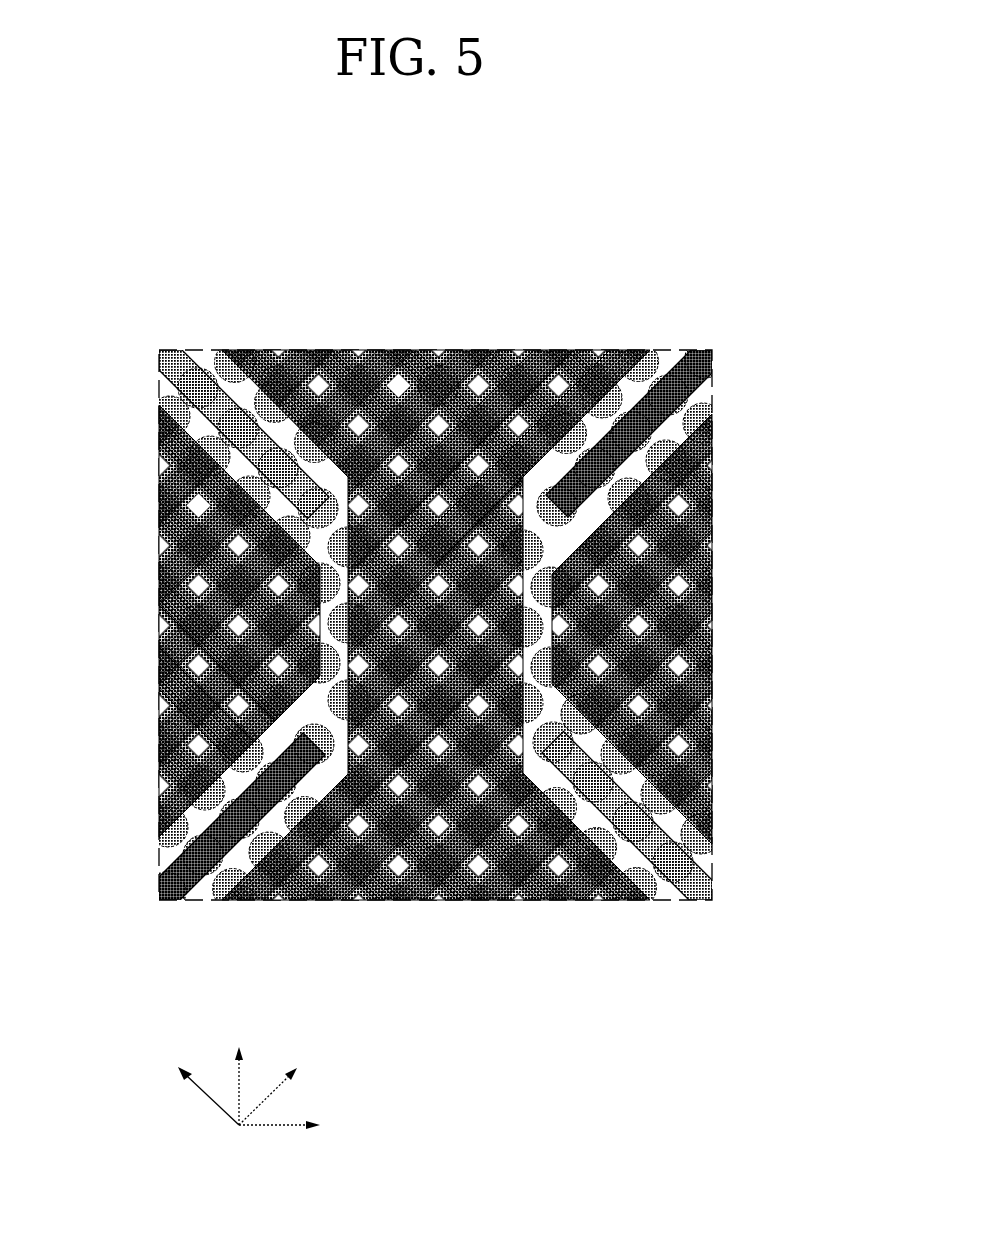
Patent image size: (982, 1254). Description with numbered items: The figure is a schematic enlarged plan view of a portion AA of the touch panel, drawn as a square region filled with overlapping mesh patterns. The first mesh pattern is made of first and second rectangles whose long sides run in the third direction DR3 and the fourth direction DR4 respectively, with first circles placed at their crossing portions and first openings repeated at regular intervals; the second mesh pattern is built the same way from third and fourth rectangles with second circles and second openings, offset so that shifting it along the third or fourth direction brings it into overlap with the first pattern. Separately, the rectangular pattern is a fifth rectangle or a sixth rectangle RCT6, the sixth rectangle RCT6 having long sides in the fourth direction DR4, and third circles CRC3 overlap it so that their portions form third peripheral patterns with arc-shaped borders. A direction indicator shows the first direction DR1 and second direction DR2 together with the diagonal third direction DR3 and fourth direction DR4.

The portion AA is at (670, 224).
The third circles CRC3 is at (200, 372).
The sixth rectangle RCT6 is at (165, 390).
The first direction DR1 is at (240, 1072).
The second direction DR2 is at (300, 1130).
The third direction DR3 is at (279, 1083).
The fourth direction DR4 is at (198, 1083).